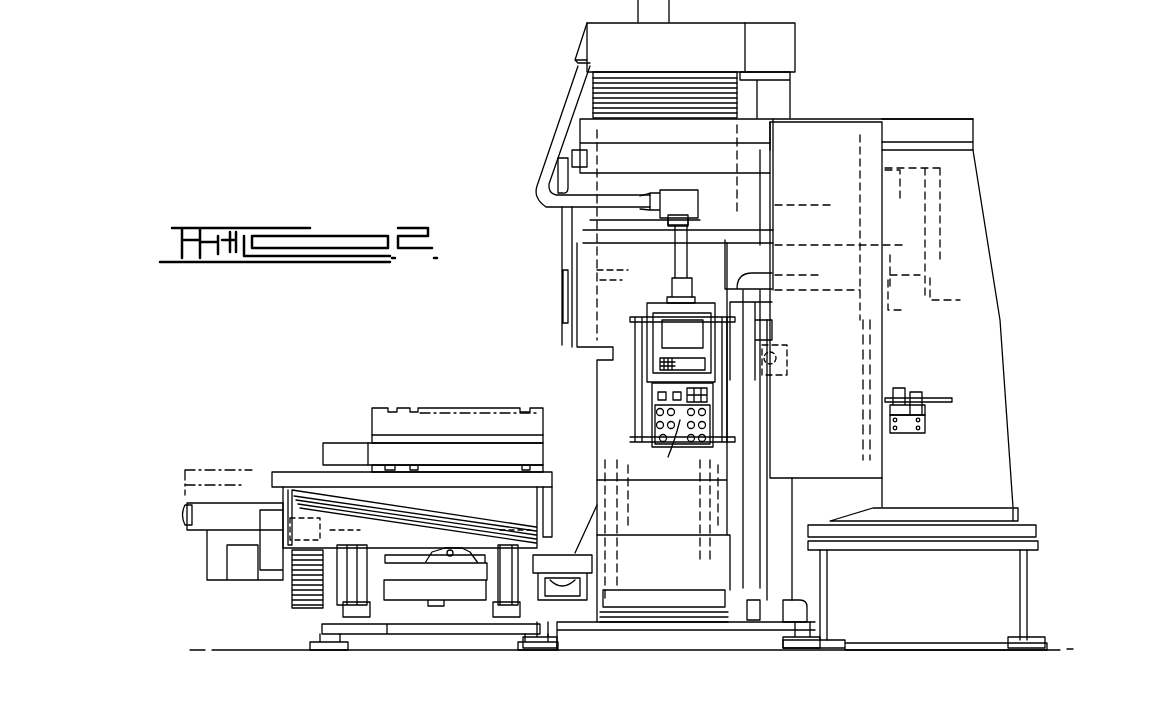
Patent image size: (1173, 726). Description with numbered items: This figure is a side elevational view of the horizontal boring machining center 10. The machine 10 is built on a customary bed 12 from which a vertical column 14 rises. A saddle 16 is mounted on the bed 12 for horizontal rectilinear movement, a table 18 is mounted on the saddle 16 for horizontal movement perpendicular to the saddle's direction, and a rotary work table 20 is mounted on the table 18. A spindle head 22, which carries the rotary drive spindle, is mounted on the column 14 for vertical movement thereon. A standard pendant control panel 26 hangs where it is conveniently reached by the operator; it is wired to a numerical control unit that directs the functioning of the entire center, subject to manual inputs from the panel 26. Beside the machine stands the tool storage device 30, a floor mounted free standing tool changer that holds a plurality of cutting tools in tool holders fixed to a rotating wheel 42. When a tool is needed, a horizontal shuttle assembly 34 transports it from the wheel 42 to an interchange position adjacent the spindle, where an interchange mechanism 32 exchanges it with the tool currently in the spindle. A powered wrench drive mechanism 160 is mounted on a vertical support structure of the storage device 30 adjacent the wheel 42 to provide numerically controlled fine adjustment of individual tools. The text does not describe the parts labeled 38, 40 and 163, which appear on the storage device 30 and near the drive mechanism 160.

The machining center 10 is at (517, 186).
The bed 12 is at (390, 608).
The vertical column 14 is at (610, 40).
The saddle 16 is at (530, 478).
The table 18 is at (335, 452).
The rotary work table 20 is at (383, 420).
The spindle head 22 is at (548, 310).
The pendant control panel 26 is at (667, 457).
The tool storage device 30 is at (874, 117).
The interchange mechanism 32 is at (563, 257).
The horizontal shuttle assembly 34 is at (600, 241).
The panel 38 is at (805, 140).
The stand 40 is at (985, 328).
The rotating wheel 42 is at (862, 437).
The powered wrench drive mechanism 160 is at (940, 421).
The probe block 163 is at (905, 435).